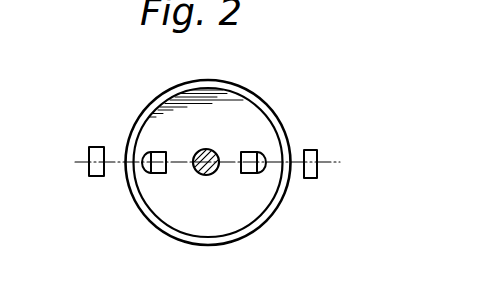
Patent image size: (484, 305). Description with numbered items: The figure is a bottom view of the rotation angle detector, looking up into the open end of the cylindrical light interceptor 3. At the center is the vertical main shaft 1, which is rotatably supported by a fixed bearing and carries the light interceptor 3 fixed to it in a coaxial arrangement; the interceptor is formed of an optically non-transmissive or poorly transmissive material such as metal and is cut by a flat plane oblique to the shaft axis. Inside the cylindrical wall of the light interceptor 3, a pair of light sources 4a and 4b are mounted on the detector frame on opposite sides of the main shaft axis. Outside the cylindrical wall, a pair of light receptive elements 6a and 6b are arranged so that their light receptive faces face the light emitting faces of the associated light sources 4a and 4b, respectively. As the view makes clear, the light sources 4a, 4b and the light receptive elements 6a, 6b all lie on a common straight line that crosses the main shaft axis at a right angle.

The main shaft 1 is at (207, 176).
The light interceptor 3 is at (257, 222).
The light source 4a is at (158, 151).
The light source 4b is at (250, 151).
The light receptive element 6a is at (94, 146).
The light receptive element 6b is at (313, 150).